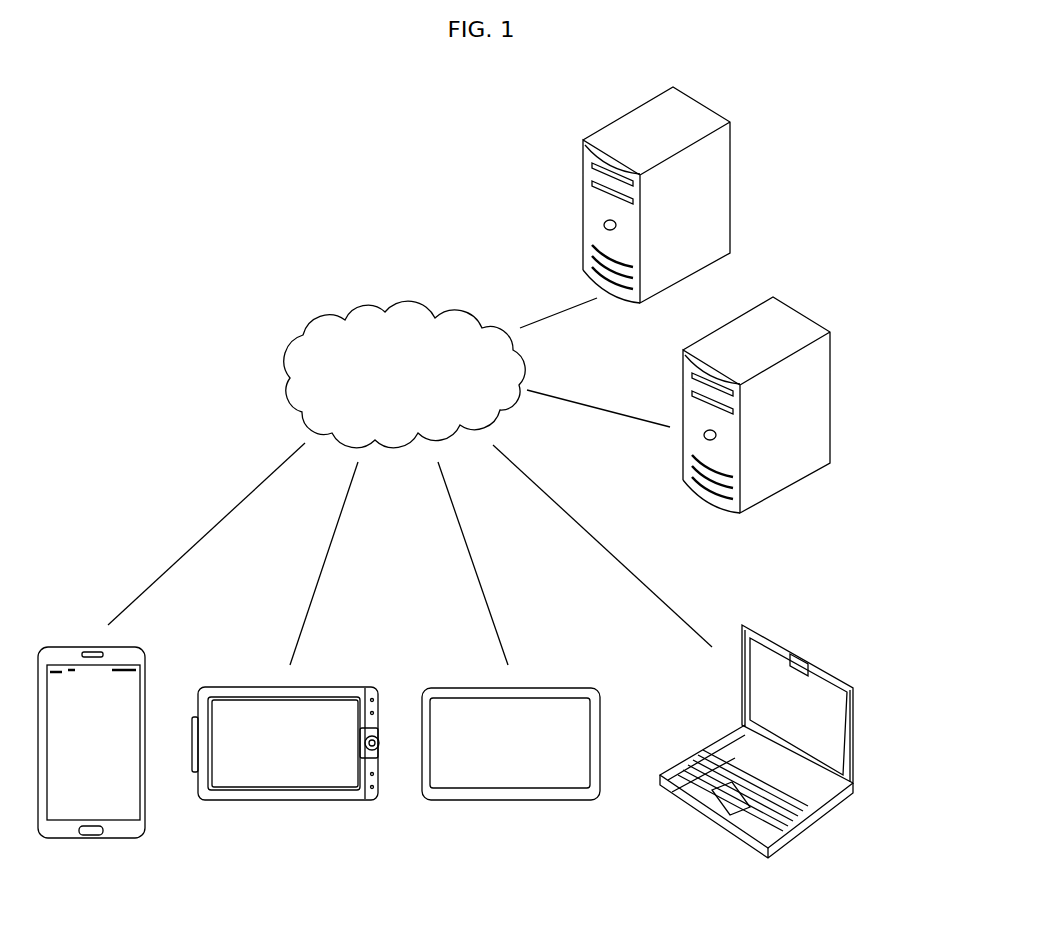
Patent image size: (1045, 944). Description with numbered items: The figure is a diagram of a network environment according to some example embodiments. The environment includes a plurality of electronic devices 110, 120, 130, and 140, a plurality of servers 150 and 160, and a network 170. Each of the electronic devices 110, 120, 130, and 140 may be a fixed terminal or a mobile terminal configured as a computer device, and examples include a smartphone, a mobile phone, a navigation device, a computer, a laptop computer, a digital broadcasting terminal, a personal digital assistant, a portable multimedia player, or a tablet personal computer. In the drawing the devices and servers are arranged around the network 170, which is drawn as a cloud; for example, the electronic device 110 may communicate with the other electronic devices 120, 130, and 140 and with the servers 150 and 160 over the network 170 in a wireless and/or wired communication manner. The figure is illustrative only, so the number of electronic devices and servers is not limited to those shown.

The electronic device 110 is at (90, 840).
The electronic device 120 is at (287, 802).
The electronic device 130 is at (512, 802).
The electronic device 140 is at (856, 738).
The server 150 is at (831, 395).
The server 160 is at (731, 185).
The network 170 is at (408, 297).